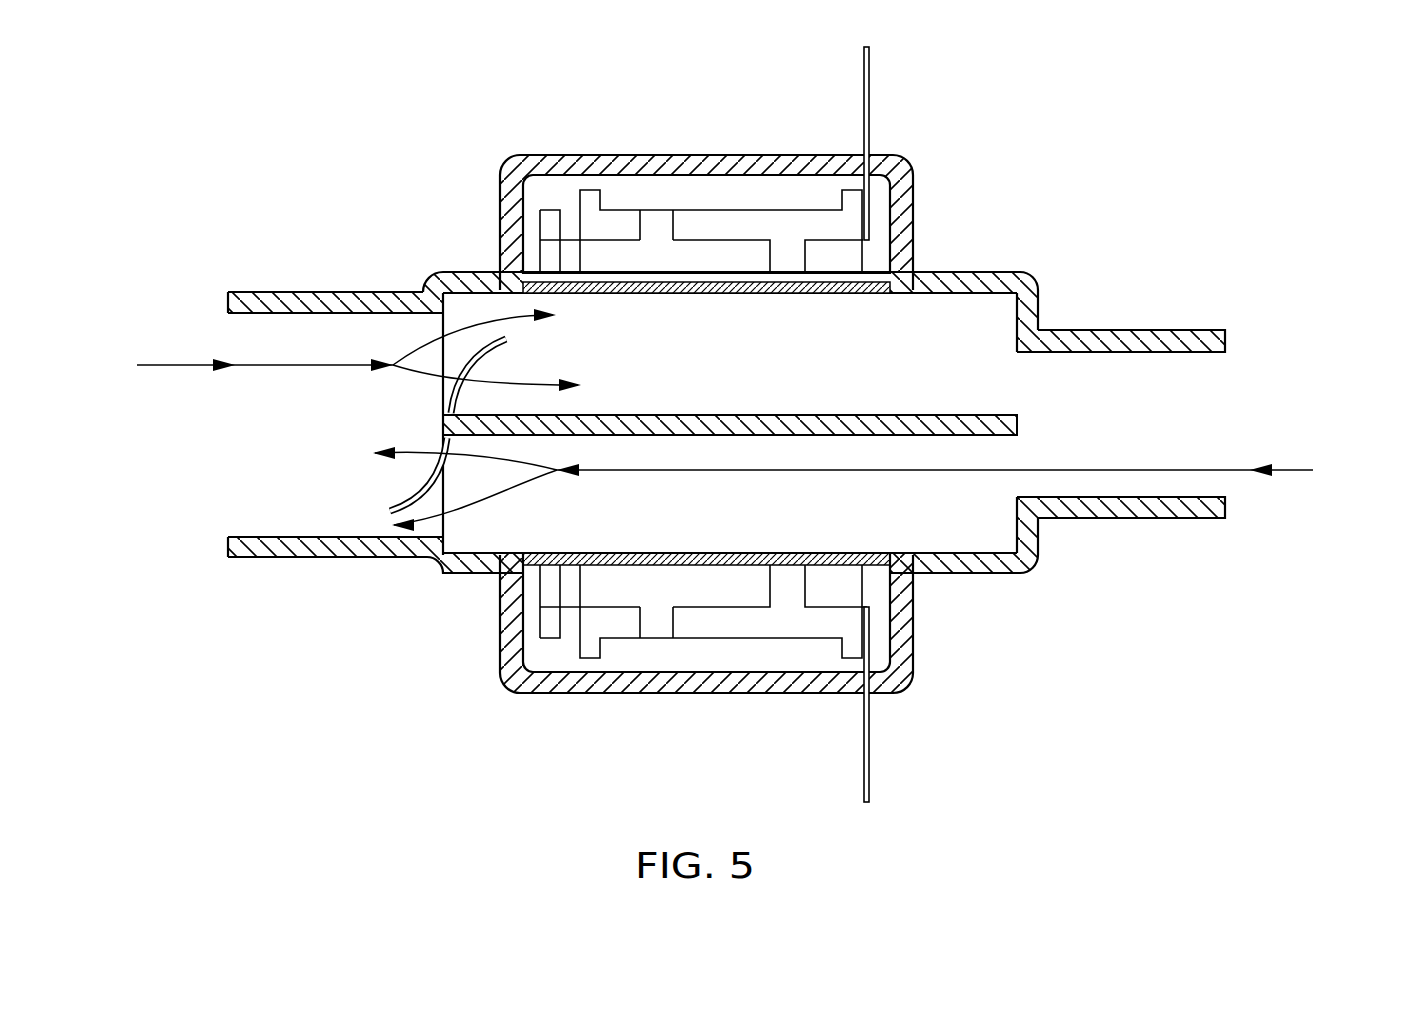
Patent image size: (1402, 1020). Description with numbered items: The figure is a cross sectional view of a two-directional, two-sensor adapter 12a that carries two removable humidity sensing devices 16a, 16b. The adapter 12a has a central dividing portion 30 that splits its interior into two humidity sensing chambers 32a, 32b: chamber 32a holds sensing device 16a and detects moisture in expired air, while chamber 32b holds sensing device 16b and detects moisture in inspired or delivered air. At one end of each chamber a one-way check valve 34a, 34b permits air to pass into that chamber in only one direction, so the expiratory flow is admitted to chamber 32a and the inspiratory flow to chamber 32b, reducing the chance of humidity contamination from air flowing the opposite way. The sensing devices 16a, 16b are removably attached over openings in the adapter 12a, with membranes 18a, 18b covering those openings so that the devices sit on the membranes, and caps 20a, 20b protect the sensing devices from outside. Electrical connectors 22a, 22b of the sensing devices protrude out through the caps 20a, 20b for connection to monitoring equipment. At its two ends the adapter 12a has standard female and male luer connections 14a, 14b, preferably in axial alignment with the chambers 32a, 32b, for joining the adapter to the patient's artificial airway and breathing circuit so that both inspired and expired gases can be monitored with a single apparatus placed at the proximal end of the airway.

The two-sensor adapter 12a is at (546, 697).
The female luer connection 14a is at (278, 523).
The male luer connection 14b is at (1141, 375).
The sensing device 16a is at (778, 220).
The sensing device 16b is at (695, 628).
The membrane 18a is at (830, 293).
The membrane 18b is at (617, 556).
The cap 20a is at (622, 155).
The cap 20b is at (913, 655).
The electrical connector 22a is at (869, 68).
The electrical connector 22b is at (869, 780).
The central dividing portion 30 is at (878, 415).
The humidity sensing chamber 32a is at (795, 377).
The humidity sensing chamber 32b is at (787, 517).
The one-way check valve 34a is at (494, 358).
The one-way check valve 34b is at (414, 490).